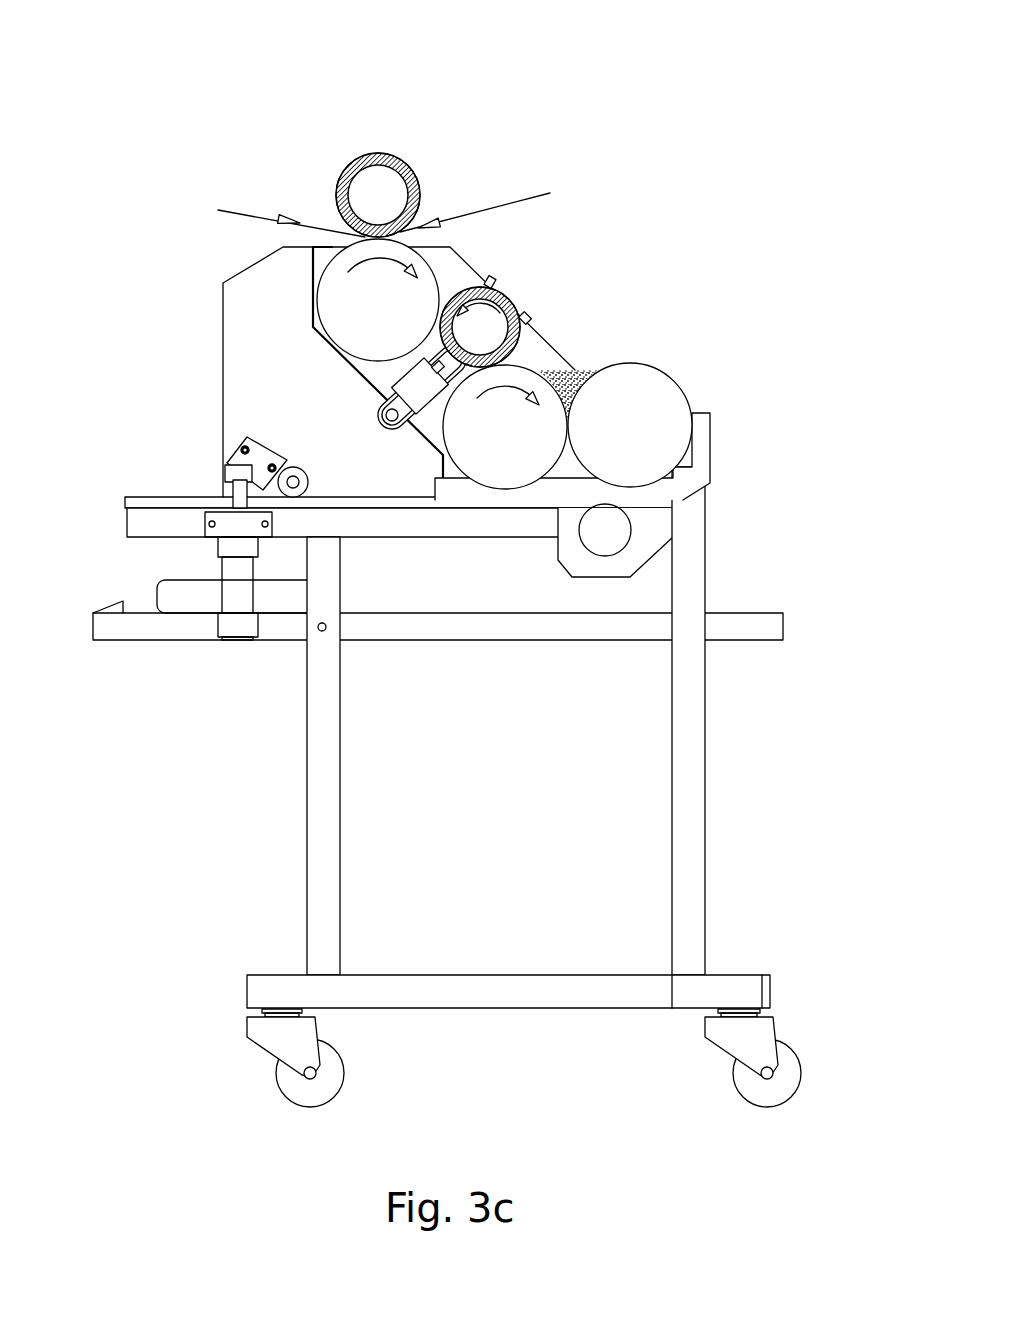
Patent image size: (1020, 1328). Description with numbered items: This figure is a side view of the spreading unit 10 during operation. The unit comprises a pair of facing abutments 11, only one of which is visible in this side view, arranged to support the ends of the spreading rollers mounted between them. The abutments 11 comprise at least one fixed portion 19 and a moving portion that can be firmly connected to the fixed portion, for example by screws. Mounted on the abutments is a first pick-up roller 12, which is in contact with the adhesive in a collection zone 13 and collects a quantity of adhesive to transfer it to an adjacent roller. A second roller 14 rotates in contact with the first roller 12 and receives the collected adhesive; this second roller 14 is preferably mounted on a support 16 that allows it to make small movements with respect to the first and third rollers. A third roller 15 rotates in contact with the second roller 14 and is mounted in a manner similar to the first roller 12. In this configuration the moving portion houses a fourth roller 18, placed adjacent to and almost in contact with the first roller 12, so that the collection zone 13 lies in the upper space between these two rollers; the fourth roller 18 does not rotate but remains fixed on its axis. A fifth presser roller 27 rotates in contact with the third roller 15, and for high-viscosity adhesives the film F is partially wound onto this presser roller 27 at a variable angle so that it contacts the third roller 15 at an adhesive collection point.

The spreading unit 10 is at (628, 160).
The abutment 11 is at (200, 282).
The first pick-up roller 12 is at (503, 447).
The collection zone 13 is at (585, 356).
The second roller 14 is at (505, 292).
The third roller 15 is at (352, 255).
The support 16 is at (410, 420).
The fourth roller 18 is at (662, 397).
The fixed portion 19 is at (262, 400).
The fifth presser roller 27 is at (385, 185).
The film F is at (384, 202).